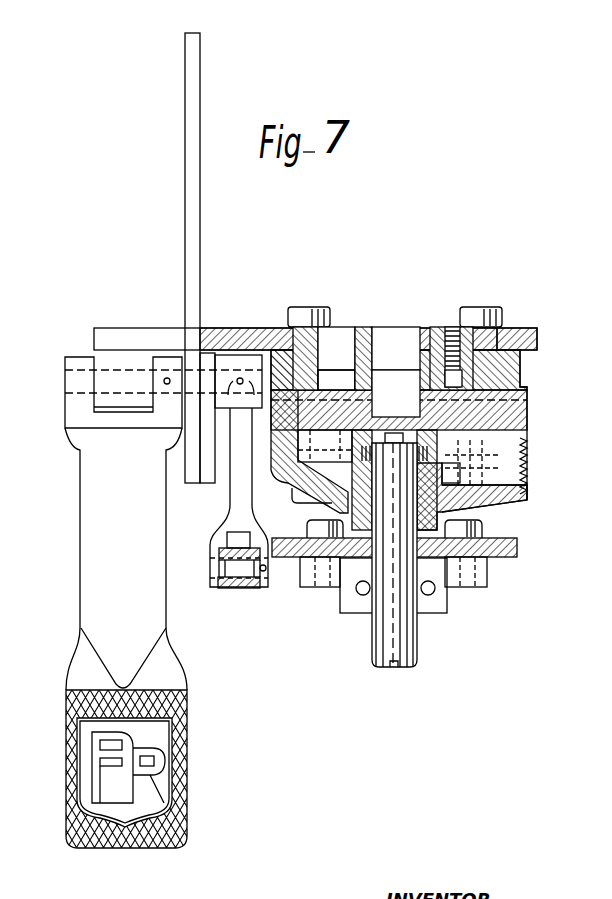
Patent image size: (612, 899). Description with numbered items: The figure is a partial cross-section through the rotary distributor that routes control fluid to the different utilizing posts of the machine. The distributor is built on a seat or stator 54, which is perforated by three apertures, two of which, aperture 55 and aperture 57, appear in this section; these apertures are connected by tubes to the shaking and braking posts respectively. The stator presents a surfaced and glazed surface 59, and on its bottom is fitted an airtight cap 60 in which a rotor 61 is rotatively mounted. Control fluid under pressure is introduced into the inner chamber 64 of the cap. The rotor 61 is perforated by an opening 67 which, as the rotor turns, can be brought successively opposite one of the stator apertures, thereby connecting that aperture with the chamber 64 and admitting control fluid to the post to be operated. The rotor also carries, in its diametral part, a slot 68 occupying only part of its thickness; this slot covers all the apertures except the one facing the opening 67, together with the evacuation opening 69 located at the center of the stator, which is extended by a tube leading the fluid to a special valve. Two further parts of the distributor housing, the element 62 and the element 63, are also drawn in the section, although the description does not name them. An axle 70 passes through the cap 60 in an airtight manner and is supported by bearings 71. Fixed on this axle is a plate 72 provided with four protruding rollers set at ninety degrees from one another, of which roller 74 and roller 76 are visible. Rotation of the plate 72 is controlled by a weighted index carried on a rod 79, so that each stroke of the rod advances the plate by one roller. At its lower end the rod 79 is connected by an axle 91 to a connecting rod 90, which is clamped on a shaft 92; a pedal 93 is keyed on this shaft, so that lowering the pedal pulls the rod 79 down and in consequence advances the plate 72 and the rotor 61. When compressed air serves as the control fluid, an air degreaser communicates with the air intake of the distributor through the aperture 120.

The seat or stator 54 is at (307, 378).
The aperture 55 is at (340, 338).
The aperture 57 is at (453, 333).
The surfaced and glazed surface 59 is at (362, 382).
The airtight cap 60 is at (455, 509).
The rotor 61 is at (527, 423).
The cover ring 62 is at (523, 390).
The bearing spring 63 is at (432, 453).
The inner chamber 64 is at (453, 477).
The opening 67 is at (343, 430).
The slot 68 is at (392, 406).
The evacuation opening 69 is at (392, 340).
The axle 70 is at (410, 652).
The bearings 71 is at (447, 605).
The plate 72 is at (520, 546).
The roller 74 is at (305, 580).
The roller 76 is at (488, 575).
The rod 79 is at (240, 590).
The connecting rod 90 is at (233, 490).
The axle 91 is at (213, 575).
The shaft 92 is at (68, 380).
The pedal 93 is at (83, 660).
The aperture 120 is at (520, 460).